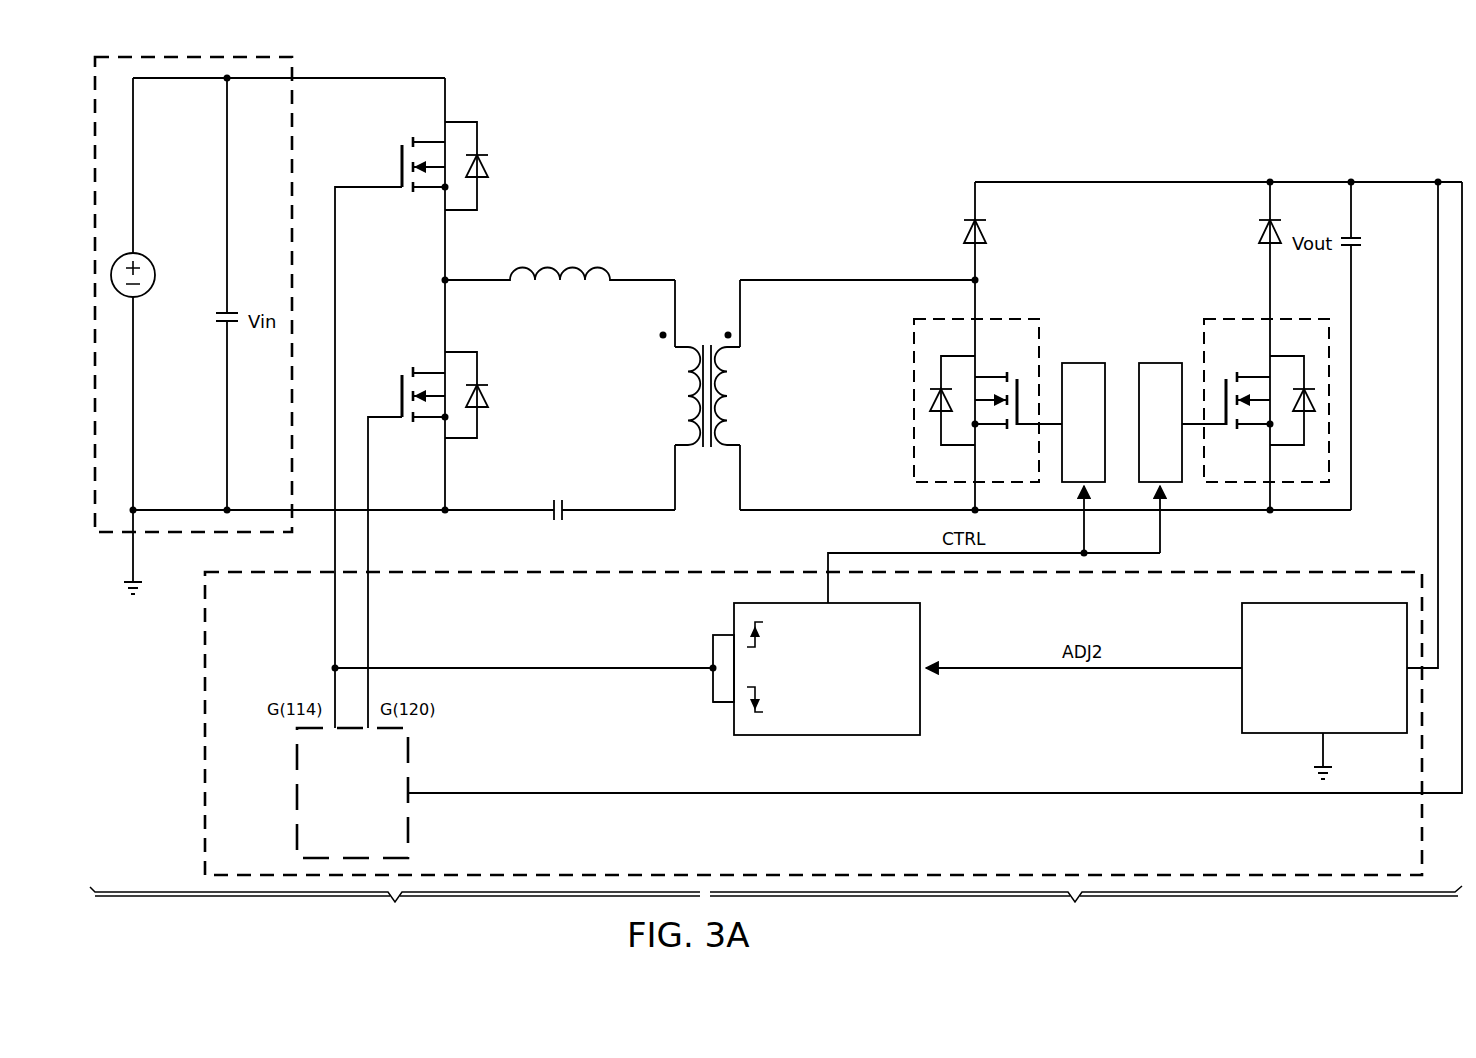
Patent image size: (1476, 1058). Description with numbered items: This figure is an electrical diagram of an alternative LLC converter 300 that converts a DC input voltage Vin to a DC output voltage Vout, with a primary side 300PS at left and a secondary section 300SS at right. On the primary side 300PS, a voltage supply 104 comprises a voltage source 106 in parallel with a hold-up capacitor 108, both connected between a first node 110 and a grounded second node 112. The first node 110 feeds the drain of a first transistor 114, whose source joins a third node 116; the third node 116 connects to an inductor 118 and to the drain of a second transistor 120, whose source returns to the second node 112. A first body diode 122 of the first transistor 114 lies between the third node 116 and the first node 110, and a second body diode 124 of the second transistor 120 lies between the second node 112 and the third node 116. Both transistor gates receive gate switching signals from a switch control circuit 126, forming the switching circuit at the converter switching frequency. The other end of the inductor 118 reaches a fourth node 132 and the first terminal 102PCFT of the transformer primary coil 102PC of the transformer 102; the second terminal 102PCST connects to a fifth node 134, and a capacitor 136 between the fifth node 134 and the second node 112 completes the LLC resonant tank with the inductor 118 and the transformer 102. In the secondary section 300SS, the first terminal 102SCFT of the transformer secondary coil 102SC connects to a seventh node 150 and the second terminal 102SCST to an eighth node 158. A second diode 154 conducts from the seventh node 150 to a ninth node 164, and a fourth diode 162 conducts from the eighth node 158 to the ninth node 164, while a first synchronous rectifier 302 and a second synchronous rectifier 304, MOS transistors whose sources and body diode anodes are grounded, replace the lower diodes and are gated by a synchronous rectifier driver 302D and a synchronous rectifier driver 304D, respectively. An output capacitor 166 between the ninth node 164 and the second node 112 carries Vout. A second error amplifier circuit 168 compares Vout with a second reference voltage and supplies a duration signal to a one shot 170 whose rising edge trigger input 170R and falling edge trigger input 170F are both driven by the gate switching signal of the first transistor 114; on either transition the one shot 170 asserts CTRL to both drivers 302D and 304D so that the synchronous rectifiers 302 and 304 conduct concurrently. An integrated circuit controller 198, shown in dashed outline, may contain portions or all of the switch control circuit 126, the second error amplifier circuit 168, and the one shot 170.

The LLC converter 300 is at (1410, 122).
The voltage supply 104 is at (300, 117).
The voltage source 106 is at (155, 258).
The capacitor 108 is at (214, 318).
The first node 110 is at (425, 78).
The second node 112 is at (178, 510).
The first transistor 114 is at (400, 160).
The third node 116 is at (444, 255).
The inductor 118 is at (572, 256).
The second transistor 120 is at (400, 376).
The first body diode 122 is at (488, 162).
The second body diode 124 is at (482, 412).
The switch control circuit 126 is at (292, 796).
The fourth node 132 is at (658, 280).
The fifth node 134 is at (628, 510).
The capacitor 136 is at (560, 498).
The transformer 102 is at (716, 280).
The transformer primary coil 102PC is at (680, 378).
The first terminal of primary coil 102PCFT is at (682, 352).
The second terminal of primary coil 102PCST is at (680, 440).
The transformer secondary coil 102SC is at (733, 378).
The first terminal of secondary coil 102SCFT is at (735, 352).
The second terminal of secondary coil 102SCST is at (735, 440).
The seventh node 150 is at (795, 280).
The second diode 154 is at (986, 230).
The eighth node 158 is at (795, 510).
The fourth diode 162 is at (1258, 231).
The ninth node 164 is at (1192, 182).
The output capacitor 166 is at (1362, 242).
The second error amplifier circuit 168 is at (1236, 700).
The one shot 170 is at (926, 700).
The rising edge trigger input 170R is at (713, 635).
The falling edge trigger input 170F is at (713, 702).
The integrated circuit controller 198 is at (200, 741).
The first synchronous rectifier 302 is at (1015, 319).
The synchronous rectifier driver 302D is at (1083, 363).
The second synchronous rectifier 304 is at (1291, 319).
The synchronous rectifier driver 304D is at (1158, 363).
The primary side 300PS is at (395, 912).
The secondary section 300SS is at (1086, 909).